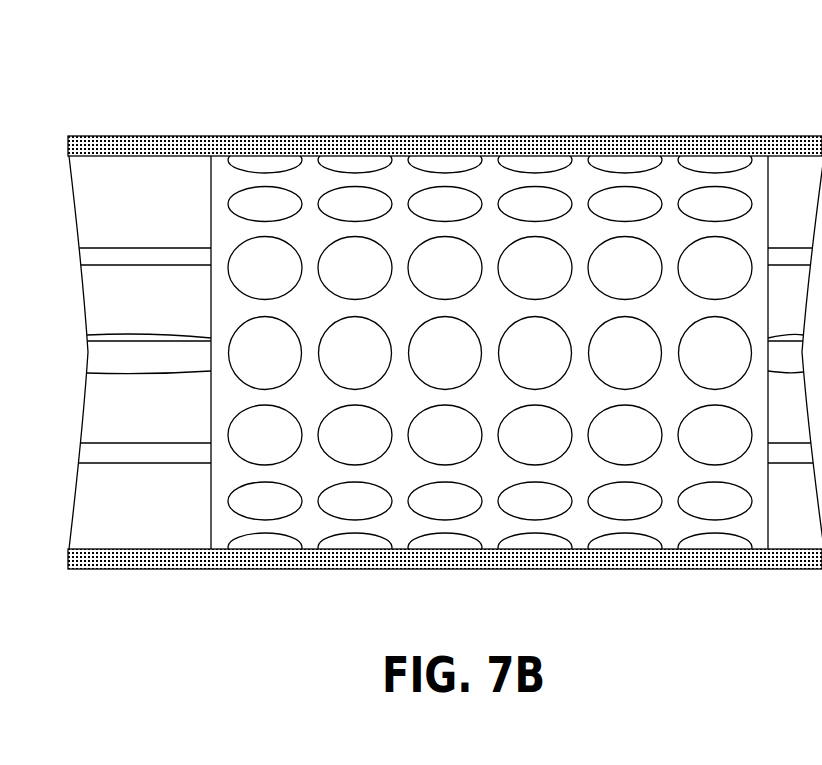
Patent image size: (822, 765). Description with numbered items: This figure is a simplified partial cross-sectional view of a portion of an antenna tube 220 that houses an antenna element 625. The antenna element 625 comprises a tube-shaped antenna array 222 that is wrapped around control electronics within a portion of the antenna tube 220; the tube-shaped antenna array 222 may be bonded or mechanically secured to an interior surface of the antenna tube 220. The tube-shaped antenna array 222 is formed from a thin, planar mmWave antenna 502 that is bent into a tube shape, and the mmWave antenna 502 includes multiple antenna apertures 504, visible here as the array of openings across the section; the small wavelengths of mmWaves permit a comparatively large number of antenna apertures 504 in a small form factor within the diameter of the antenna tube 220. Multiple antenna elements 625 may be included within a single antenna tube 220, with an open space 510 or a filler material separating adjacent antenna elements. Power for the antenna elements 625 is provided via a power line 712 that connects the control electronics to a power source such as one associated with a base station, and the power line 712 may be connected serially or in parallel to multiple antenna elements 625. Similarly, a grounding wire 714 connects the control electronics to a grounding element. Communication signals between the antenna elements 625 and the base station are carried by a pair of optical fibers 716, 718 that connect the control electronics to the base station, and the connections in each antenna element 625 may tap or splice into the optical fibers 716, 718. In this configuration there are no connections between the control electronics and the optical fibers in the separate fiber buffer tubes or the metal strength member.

The power line 712 is at (102, 248).
The mmWave antenna 502 is at (210, 208).
The antenna apertures 504 is at (383, 168).
The antenna element 625 is at (574, 153).
The antenna tube 220 is at (789, 138).
The optical fiber 716 is at (120, 333).
The optical fiber 718 is at (177, 368).
The tube-shaped antenna array 222 is at (203, 388).
The open space 510 is at (185, 511).
The grounding wire 714 is at (110, 463).